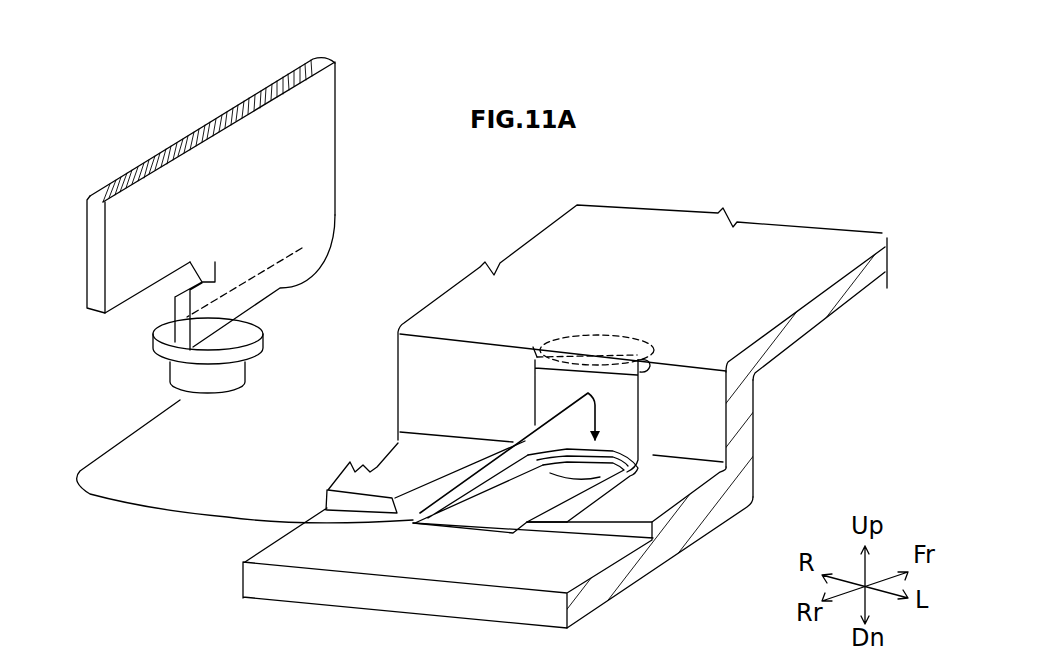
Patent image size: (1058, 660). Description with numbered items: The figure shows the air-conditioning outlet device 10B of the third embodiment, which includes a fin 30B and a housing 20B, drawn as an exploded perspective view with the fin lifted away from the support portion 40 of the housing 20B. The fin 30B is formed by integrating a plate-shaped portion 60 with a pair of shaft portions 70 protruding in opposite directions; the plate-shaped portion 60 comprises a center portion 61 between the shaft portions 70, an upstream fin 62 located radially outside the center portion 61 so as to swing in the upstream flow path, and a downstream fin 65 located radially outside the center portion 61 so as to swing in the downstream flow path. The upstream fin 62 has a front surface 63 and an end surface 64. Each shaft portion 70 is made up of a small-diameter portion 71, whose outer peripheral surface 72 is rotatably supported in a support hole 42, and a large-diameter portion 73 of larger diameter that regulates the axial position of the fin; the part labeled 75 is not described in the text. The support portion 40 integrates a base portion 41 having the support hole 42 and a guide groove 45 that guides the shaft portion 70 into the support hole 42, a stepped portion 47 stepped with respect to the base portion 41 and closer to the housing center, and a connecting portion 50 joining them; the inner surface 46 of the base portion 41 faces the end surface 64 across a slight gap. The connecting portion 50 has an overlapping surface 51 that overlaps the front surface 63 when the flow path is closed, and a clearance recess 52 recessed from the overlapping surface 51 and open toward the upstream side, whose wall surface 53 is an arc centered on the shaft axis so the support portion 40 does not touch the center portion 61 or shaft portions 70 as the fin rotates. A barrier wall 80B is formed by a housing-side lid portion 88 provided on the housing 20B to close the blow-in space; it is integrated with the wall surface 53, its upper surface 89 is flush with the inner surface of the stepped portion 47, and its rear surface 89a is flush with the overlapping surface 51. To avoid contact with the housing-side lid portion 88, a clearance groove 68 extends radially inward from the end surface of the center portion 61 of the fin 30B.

The air-conditioning outlet device 10B is at (722, 50).
The housing 20B is at (753, 221).
The fin 30B is at (340, 78).
The support portion 40 is at (764, 467).
The base portion 41 is at (675, 533).
The support hole 42 is at (597, 477).
The guide groove 45 is at (487, 515).
The inner surface 46 is at (401, 452).
The stepped portion 47 is at (825, 312).
The connecting portion 50 is at (757, 432).
The overlapping surface 51 is at (465, 361).
The clearance recess 52 is at (553, 396).
The wall surface 53 is at (618, 396).
The plate-shaped portion 60 is at (62, 112).
The center portion 61 is at (222, 136).
The upstream fin 62 is at (312, 60).
The front surface 63 is at (322, 148).
The end surface 64 is at (285, 296).
The downstream fin 65 is at (128, 196).
The clearance groove 68 is at (216, 292).
The shaft portion 70 is at (290, 440).
The small-diameter portion 71 is at (218, 383).
The outer peripheral surface 72 is at (170, 374).
The large-diameter portion 73 is at (247, 355).
The flange head 75 is at (153, 350).
The housing-side lid portion 88 is at (613, 343).
The barrier wall 80B is at (597, 350).
The upper surface 89 is at (577, 340).
The rear surface 89a is at (535, 357).